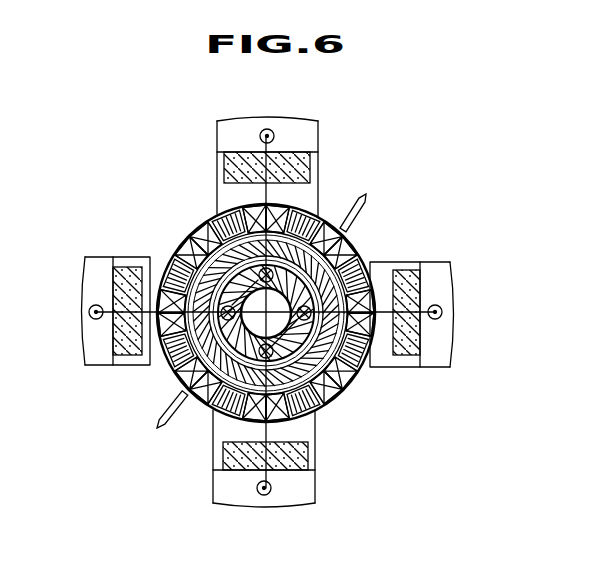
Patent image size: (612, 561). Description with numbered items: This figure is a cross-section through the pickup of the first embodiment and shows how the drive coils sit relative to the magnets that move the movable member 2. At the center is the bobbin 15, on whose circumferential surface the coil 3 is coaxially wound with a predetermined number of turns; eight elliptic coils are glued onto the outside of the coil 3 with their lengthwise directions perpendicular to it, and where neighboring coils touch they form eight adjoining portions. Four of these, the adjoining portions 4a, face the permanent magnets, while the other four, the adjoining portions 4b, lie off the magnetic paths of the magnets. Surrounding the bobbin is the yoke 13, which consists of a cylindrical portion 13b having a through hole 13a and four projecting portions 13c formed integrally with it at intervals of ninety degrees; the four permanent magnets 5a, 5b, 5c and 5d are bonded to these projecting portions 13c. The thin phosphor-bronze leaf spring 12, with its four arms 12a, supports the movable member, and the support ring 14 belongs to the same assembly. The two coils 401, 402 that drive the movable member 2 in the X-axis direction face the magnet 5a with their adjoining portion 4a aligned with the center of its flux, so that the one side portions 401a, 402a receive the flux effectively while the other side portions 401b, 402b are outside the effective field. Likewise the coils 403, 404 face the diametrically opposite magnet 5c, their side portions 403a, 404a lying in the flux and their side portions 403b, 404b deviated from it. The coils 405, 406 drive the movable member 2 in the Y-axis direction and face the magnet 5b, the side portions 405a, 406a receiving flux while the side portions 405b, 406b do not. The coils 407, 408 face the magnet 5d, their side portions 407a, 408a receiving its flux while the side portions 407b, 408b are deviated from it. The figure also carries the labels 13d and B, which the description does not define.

The movable member 2 is at (470, 288).
The coil 3 is at (338, 283).
The adjoining portions 4a is at (228, 155).
The adjoining portions 4b is at (352, 236).
The permanent magnet 5a is at (112, 294).
The permanent magnet 5b is at (228, 458).
The permanent magnet 5c is at (433, 306).
The permanent magnet 5d is at (248, 160).
The leaf spring 12 is at (367, 194).
The arms 12a is at (157, 427).
The yoke 13 is at (432, 368).
The through hole 13a is at (216, 418).
The cylindrical portion 13b is at (345, 424).
The projecting portions 13c is at (243, 125).
The stator yoke portion 13d is at (279, 125).
The support ring 14 is at (345, 398).
The bobbin 15 is at (187, 374).
The coil 401 is at (119, 381).
The one side portion 401a is at (165, 355).
The other side portion 401b is at (175, 392).
The coil 402 is at (139, 256).
The one side portion 402a is at (165, 262).
The other side portion 402b is at (178, 248).
The coil 403 is at (417, 374).
The one side portion 403a is at (384, 335).
The other side portion 403b is at (350, 395).
The coil 404 is at (437, 243).
The one side portion 404a is at (392, 252).
The other side portion 404b is at (380, 238).
The coil 405 is at (169, 440).
The one side portion 405a is at (225, 440).
The other side portion 405b is at (200, 422).
The coil 406 is at (356, 435).
The one side portion 406a is at (308, 440).
The other side portion 406b is at (313, 428).
The coil 407 is at (171, 194).
The one side portion 407a is at (218, 212).
The other side portion 407b is at (203, 228).
The coil 408 is at (376, 193).
The one side portion 408a is at (315, 210).
The other side portion 408b is at (328, 228).
The section line B is at (318, 142).